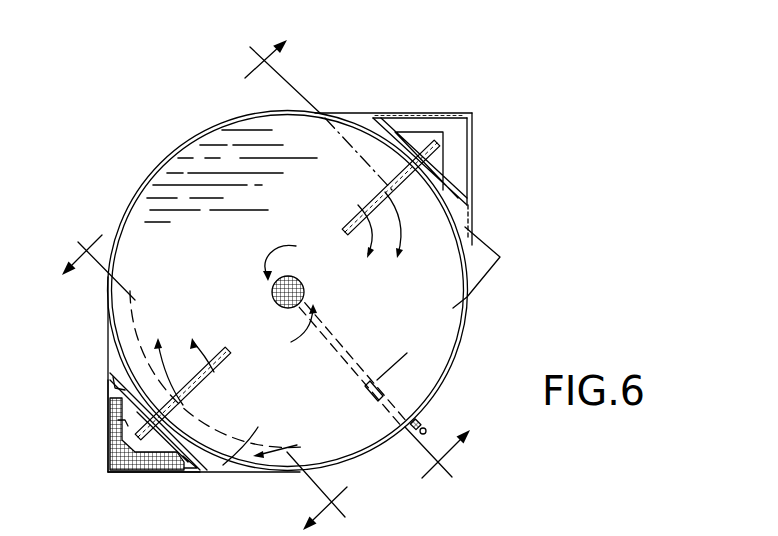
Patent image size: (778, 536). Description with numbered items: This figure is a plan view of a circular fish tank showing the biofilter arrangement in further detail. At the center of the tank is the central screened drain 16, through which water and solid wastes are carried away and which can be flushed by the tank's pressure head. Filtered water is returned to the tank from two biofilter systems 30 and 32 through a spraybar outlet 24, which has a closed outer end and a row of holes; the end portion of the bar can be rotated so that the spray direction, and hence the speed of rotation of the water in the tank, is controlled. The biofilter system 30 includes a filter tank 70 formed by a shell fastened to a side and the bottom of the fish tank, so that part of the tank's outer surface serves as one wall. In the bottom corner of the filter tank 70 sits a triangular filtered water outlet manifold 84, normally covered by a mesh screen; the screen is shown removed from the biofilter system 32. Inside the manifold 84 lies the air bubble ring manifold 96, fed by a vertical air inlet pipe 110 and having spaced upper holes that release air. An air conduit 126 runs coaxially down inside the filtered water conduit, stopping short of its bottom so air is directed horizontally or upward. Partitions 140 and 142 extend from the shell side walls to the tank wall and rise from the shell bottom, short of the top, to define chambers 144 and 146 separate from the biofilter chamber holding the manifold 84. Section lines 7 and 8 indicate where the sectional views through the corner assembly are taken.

The section line 7- 7 is at (357, 256).
The section line 8- 8 is at (198, 385).
The central screened drain 16 is at (308, 285).
The spraybar outlet 24 is at (226, 353).
The biofilter system 30 is at (109, 487).
The biofilter system 32 is at (426, 104).
The filter tank 70 is at (177, 473).
The filtered water outlet manifold 84 is at (450, 133).
The air bubble ring manifold 96 is at (474, 154).
The vertical air inlet pipe 110 is at (113, 393).
The air conduit 126 is at (120, 428).
The partition 140 is at (288, 291).
The partition 142 is at (454, 241).
The chamber 144 is at (233, 473).
The chamber 146 is at (108, 341).